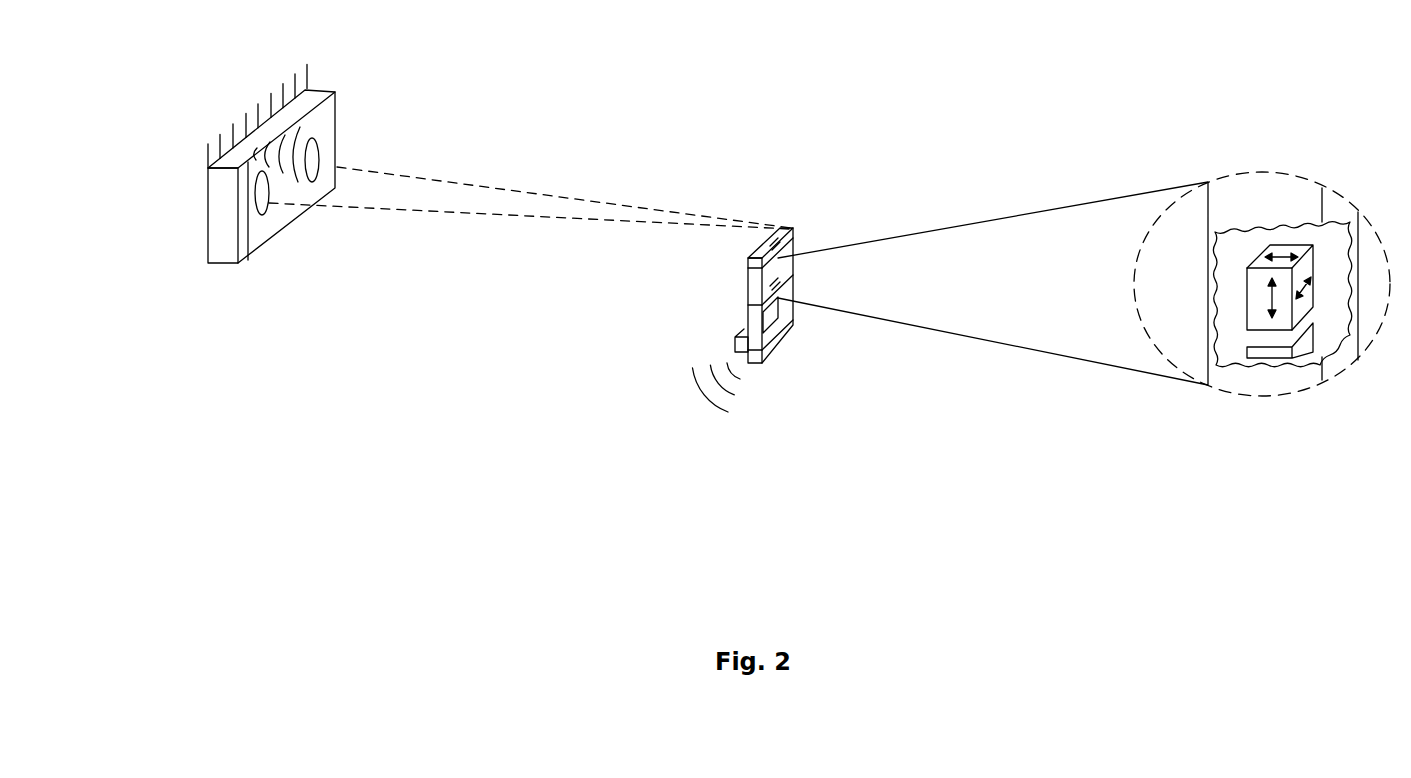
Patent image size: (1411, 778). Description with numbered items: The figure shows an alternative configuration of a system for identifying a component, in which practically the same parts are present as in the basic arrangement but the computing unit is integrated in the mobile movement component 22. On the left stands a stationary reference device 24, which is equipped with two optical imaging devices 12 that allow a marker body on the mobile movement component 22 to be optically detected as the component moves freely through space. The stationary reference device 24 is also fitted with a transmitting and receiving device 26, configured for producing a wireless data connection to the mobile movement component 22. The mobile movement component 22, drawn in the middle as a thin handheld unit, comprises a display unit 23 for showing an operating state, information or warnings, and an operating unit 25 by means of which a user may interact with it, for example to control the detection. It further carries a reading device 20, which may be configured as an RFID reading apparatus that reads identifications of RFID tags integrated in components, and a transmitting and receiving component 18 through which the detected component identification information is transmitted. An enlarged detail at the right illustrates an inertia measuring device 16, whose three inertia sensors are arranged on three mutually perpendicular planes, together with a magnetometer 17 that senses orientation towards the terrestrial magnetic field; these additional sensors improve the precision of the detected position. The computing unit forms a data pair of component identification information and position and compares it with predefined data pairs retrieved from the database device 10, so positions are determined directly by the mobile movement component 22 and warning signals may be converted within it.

The database device 10 is at (793, 325).
The optical imaging device 12 is at (319, 158).
The inertia measuring device 16 is at (1280, 323).
The magnetometer 17 is at (1305, 342).
The transmitting and receiving component 18 is at (777, 343).
The reading device 20 is at (735, 353).
The mobile movement component 22 is at (793, 288).
The display unit 23 is at (748, 268).
The stationary reference device 24 is at (330, 130).
The operating unit 25 is at (753, 307).
The transmitting and receiving device 26 is at (223, 230).